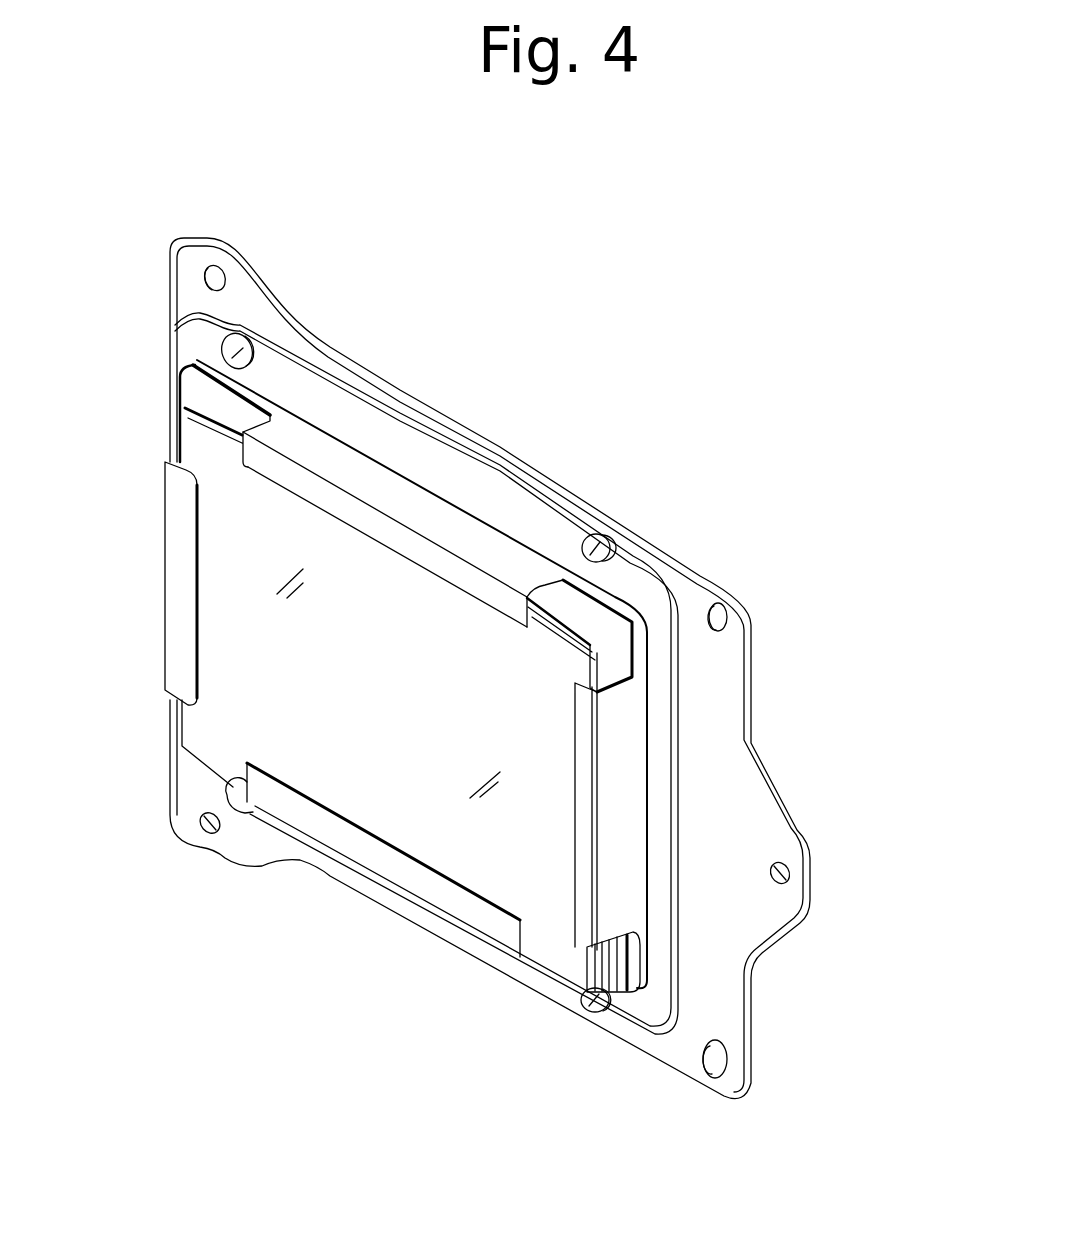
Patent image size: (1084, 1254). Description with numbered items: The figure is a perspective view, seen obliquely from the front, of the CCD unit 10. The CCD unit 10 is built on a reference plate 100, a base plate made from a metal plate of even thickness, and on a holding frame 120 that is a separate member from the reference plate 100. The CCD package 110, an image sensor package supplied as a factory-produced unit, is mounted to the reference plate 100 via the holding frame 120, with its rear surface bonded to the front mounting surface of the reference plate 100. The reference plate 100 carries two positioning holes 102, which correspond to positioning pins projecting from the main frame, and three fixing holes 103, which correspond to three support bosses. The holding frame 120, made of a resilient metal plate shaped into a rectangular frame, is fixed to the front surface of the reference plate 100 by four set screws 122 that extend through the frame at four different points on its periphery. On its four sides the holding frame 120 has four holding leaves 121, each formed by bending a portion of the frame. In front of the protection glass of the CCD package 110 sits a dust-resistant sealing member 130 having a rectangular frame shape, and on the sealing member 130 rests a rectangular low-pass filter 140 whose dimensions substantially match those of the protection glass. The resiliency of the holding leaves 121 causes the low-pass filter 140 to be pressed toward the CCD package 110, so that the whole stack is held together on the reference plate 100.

The CCD unit 10 is at (603, 428).
The reference plate 100 is at (685, 1042).
The positioning hole 102 is at (718, 618).
The fixing hole 103 is at (215, 270).
The CCD package 110 is at (625, 603).
The holding frame 120 is at (378, 470).
The holding leaf 121 is at (445, 565).
The set screw 122 is at (243, 350).
The dust-resistant sealing member 130 is at (607, 966).
The low-pass filter 140 is at (358, 763).